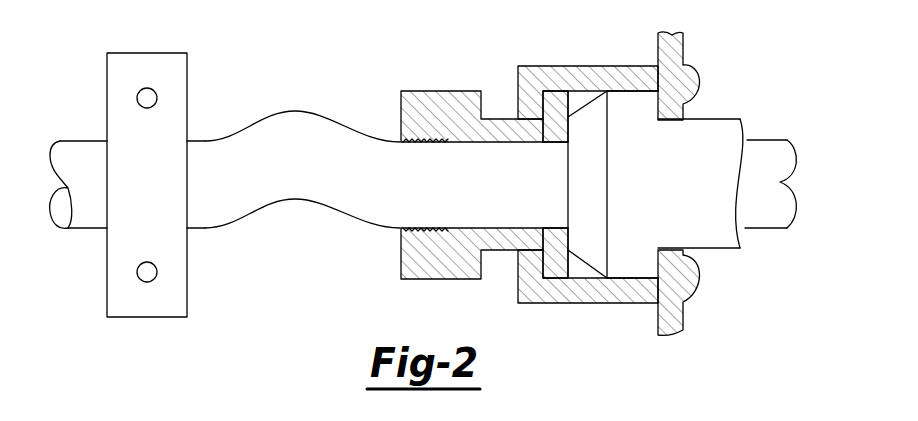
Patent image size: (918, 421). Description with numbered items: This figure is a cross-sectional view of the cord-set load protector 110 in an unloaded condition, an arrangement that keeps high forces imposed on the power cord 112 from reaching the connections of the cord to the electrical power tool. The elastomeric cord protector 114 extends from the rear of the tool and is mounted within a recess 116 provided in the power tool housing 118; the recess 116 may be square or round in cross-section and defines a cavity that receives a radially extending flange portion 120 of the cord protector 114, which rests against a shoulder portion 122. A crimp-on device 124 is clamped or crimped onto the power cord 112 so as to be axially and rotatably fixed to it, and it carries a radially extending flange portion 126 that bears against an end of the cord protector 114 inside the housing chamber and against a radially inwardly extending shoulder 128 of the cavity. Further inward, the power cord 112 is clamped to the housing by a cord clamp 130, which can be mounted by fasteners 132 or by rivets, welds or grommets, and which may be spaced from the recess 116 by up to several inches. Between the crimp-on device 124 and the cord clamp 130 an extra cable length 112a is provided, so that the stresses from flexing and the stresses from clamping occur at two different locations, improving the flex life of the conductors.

The cord-set load protector 110 is at (711, 45).
The power cord 112 is at (424, 140).
The extra cable length 112a is at (297, 110).
The cord protector 114 is at (722, 118).
The recess 116 is at (580, 278).
The power tool housing 118 is at (533, 65).
The radially extending flange portion 120 is at (634, 272).
The shoulder portion 122 is at (655, 108).
The crimp-on device 124 is at (393, 257).
The radially extending flange portion 126 is at (555, 278).
The radially inwardly extending shoulder 128 is at (547, 107).
The cord clamp 130 is at (119, 216).
The fasteners 132 is at (142, 275).